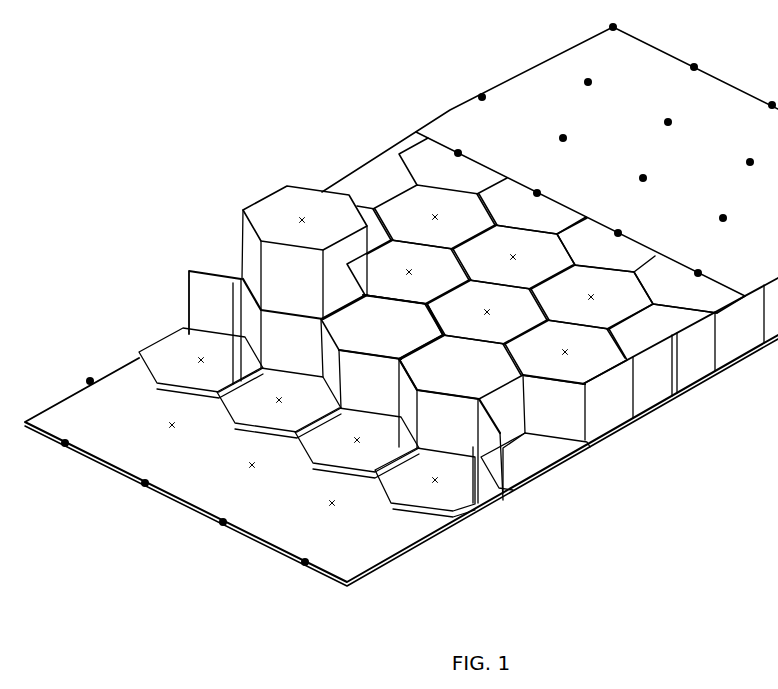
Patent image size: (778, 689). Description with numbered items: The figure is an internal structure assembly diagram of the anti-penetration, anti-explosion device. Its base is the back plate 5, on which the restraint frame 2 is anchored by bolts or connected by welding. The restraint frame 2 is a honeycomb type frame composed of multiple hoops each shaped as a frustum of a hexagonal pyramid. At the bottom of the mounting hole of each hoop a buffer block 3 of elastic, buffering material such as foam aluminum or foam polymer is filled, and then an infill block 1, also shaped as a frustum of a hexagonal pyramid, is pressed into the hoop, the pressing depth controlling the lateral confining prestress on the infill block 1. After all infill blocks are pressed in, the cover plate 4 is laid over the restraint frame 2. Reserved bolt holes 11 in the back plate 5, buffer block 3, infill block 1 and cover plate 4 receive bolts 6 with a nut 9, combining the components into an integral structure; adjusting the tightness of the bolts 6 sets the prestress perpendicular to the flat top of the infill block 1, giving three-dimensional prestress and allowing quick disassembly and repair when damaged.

The infill block 1 is at (263, 221).
The restraint frame 2 is at (207, 283).
The buffer block 3 is at (172, 348).
The cover plate 4 is at (470, 128).
The back plate 5 is at (123, 403).
The bolts 6 is at (777, 340).
The nut 9 is at (482, 97).
The bolt holes 11 is at (430, 216).